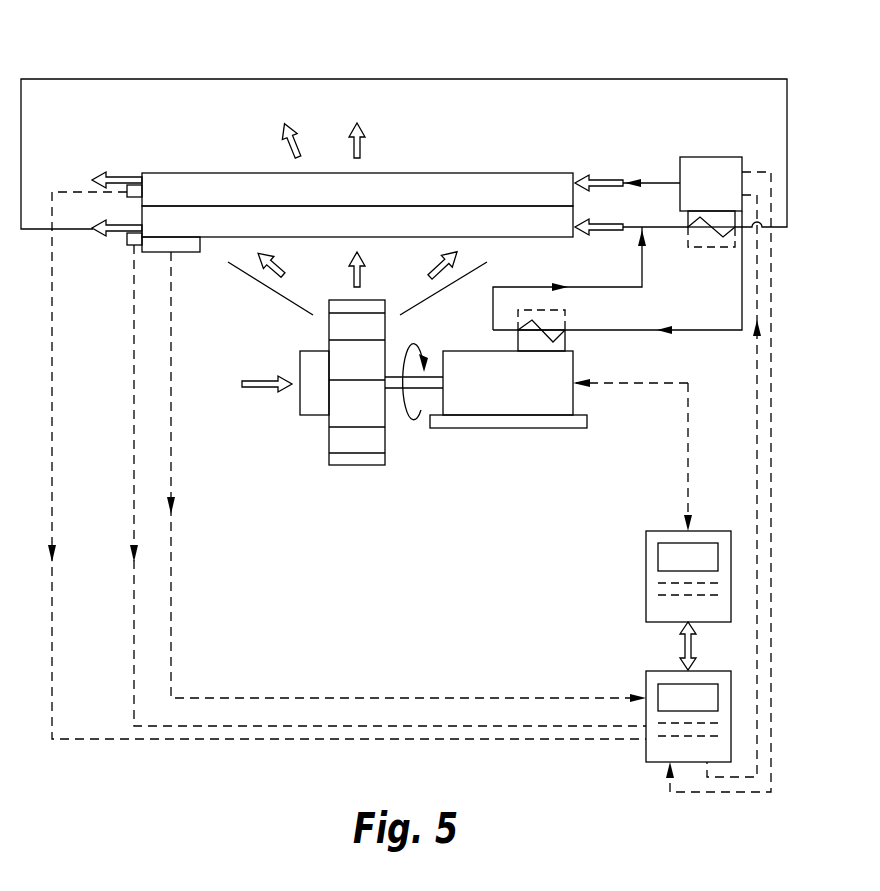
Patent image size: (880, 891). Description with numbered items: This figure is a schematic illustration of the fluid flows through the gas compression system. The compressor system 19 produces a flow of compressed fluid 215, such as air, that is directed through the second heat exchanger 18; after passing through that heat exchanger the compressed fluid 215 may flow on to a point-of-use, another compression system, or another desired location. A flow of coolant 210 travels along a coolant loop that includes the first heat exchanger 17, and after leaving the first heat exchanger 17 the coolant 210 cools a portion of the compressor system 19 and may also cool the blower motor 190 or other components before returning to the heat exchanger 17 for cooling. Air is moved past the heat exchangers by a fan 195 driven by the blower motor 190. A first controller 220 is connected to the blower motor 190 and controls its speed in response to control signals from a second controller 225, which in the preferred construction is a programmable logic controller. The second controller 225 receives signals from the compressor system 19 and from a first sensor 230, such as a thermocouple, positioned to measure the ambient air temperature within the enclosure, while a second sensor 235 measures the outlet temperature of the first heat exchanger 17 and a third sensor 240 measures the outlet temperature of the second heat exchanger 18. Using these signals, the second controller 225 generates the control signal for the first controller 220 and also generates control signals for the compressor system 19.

The first heat exchanger 17 is at (537, 222).
The second heat exchanger 18 is at (465, 182).
The compressor system 19 is at (723, 198).
The blower motor 190 is at (482, 398).
The fan 195 is at (345, 420).
The flow of coolant 210 is at (518, 78).
The flow of compressed fluid 215 is at (652, 183).
The first controller 220 is at (646, 552).
The second controller 225 is at (646, 683).
The first sensor 230 is at (192, 251).
The second sensor 235 is at (130, 248).
The third sensor 240 is at (136, 187).